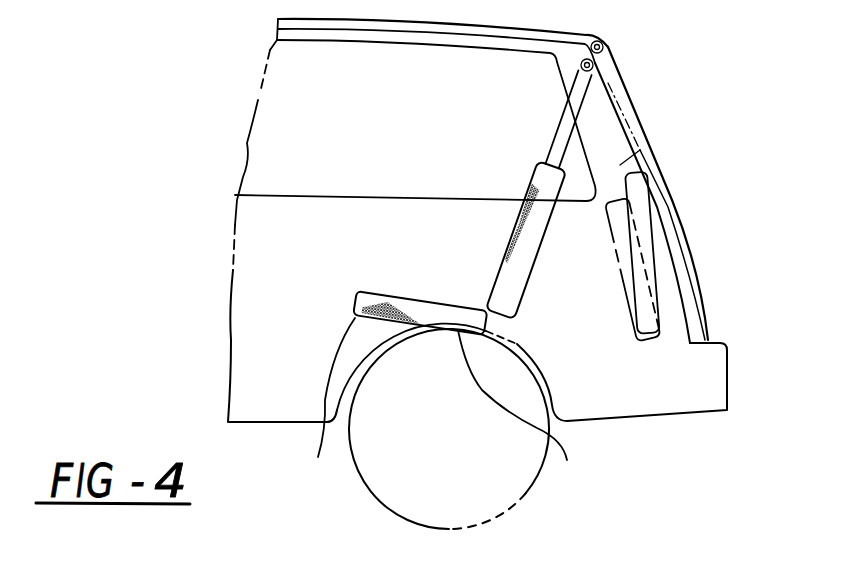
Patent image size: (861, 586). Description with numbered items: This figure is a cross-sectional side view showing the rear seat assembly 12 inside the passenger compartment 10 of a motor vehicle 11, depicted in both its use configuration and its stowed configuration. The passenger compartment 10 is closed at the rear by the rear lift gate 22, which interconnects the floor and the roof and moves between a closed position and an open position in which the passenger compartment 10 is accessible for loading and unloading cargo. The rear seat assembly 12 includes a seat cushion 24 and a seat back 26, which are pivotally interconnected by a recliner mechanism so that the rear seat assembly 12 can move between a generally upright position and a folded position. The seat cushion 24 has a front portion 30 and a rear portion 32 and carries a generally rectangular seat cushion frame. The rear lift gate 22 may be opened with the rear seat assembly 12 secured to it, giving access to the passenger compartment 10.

The passenger compartment 10 is at (392, 176).
The motor vehicle 11 is at (700, 413).
The rear seat assembly 12 is at (502, 187).
The rear lift gate 22 is at (697, 290).
The seat cushion 24 is at (363, 293).
The seat back 26 is at (548, 166).
The front portion 30 is at (319, 399).
The rear portion 32 is at (527, 414).